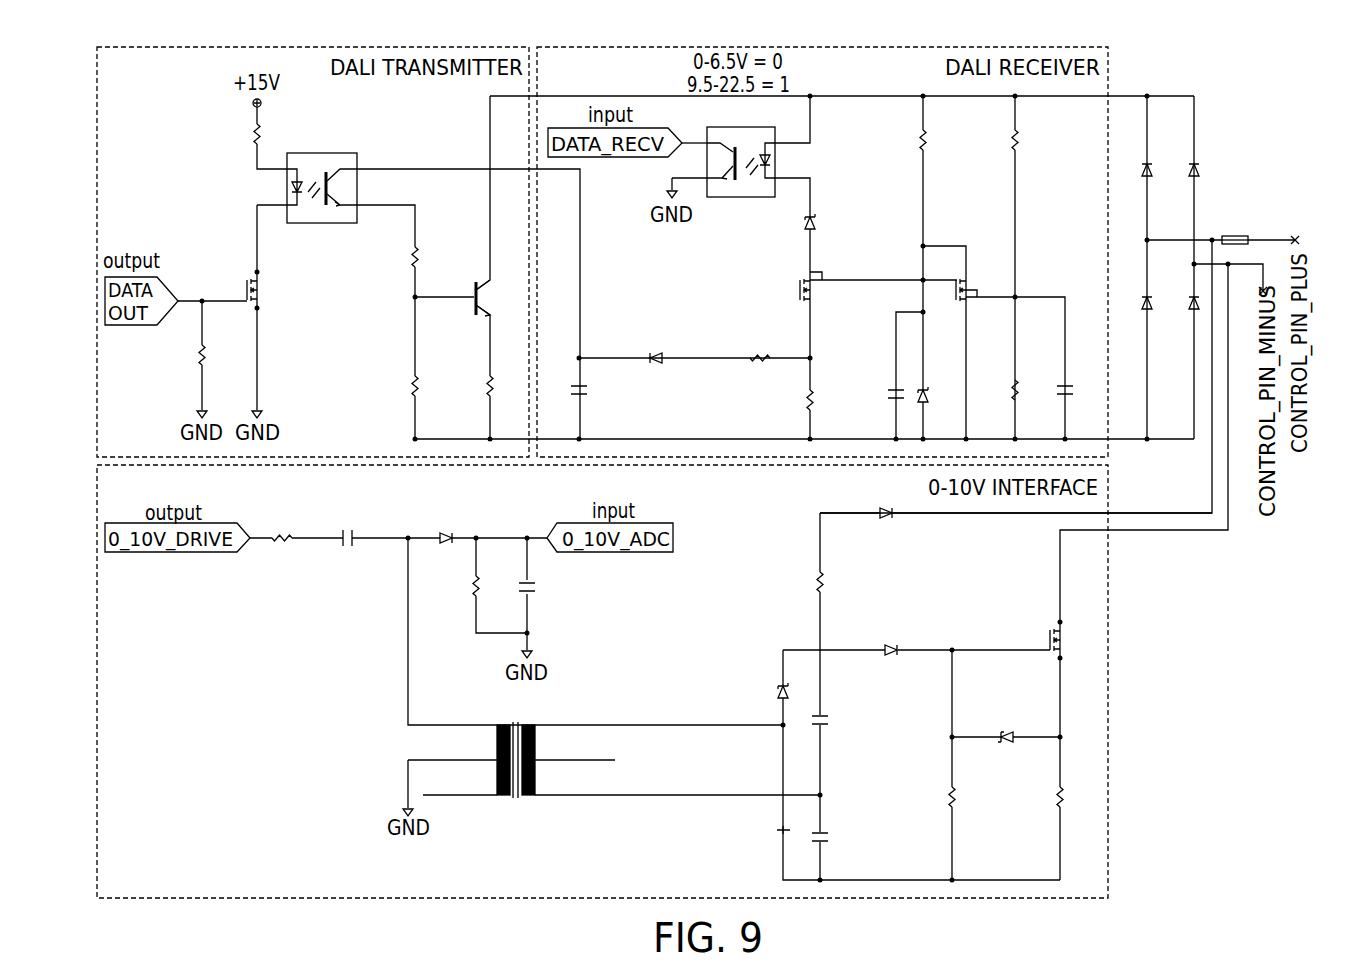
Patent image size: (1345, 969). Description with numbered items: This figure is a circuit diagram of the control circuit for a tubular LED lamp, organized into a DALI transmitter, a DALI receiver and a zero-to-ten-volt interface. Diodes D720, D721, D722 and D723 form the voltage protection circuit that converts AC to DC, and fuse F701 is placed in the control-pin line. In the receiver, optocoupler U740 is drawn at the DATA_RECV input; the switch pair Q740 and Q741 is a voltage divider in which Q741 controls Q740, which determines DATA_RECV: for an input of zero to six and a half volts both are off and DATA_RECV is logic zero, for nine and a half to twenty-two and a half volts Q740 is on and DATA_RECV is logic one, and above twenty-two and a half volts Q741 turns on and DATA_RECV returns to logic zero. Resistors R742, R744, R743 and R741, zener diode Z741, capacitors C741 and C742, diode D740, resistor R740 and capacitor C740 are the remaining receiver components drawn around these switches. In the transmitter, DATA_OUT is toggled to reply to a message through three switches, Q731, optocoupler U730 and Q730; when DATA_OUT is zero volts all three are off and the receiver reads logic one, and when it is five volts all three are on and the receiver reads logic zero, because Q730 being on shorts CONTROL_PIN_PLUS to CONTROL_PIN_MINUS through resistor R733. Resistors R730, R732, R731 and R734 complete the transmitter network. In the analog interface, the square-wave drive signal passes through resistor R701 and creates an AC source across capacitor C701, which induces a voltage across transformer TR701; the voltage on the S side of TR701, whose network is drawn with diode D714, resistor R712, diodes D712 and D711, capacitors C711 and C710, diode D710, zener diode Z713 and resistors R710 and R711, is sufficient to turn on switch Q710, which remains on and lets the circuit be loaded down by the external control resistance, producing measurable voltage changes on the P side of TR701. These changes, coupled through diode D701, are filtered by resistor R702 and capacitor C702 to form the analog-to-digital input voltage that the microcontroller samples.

The resistor R730 is at (241, 133).
The optocoupler U730 is at (322, 176).
The resistor R732 is at (400, 256).
The resistor R731 is at (400, 386).
The resistor R733 is at (507, 386).
The resistor R734 is at (230, 353).
The switch Q731 is at (285, 290).
The switch Q730 is at (459, 285).
The optocoupler U740 is at (723, 149).
The zener diode Z741 is at (833, 222).
The switch Q740 is at (783, 282).
The switch Q741 is at (954, 284).
The resistor R742 is at (910, 141).
The resistor R744 is at (1002, 141).
The resistor R743 is at (1031, 391).
The capacitor C742 is at (1081, 391).
The resistor R741 is at (782, 403).
The resistor R740 is at (760, 343).
The diode D740 is at (656, 344).
The capacitor C740 is at (609, 394).
The capacitor C741 is at (868, 394).
The voltage protection circuit diode D721 is at (1132, 172).
The voltage protection circuit diode D723 is at (1179, 172).
The voltage protection circuit diode D720 is at (1132, 307).
The voltage protection circuit diode D722 is at (1179, 307).
The fuse F701 is at (1235, 227).
The resistor R701 is at (282, 524).
The capacitor C701 is at (346, 523).
The diode D701 is at (447, 525).
The filter resistor R702 is at (493, 586).
The filter capacitor C702 is at (556, 589).
The transformer TR701 is at (517, 747).
The diode D714 is at (886, 501).
The resistor R712 is at (837, 581).
The diode D712 is at (890, 635).
The zener diode D711 is at (758, 694).
The capacitor C711 is at (849, 722).
The diode D710 is at (759, 832).
The capacitor C710 is at (850, 839).
The switch Q710 is at (1034, 633).
The zener diode Z713 is at (1004, 723).
The resistor R710 is at (969, 796).
The resistor R711 is at (1046, 796).